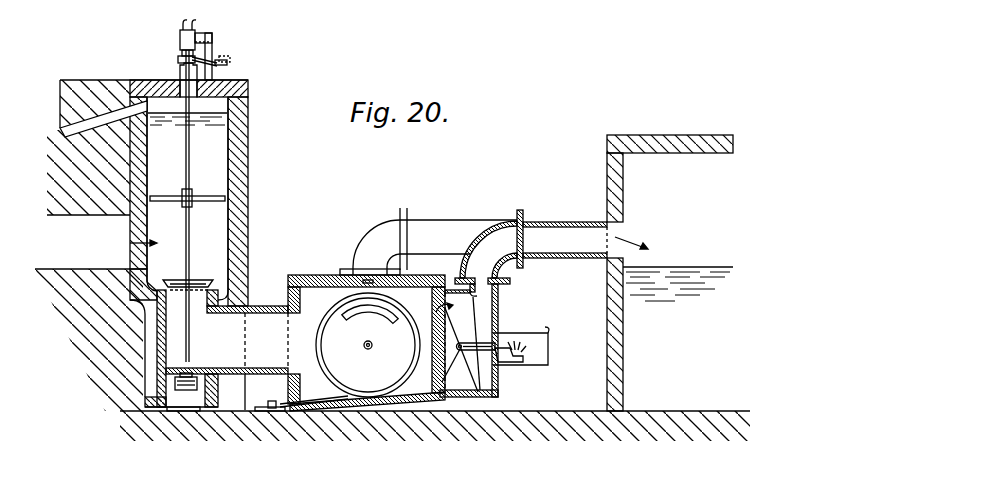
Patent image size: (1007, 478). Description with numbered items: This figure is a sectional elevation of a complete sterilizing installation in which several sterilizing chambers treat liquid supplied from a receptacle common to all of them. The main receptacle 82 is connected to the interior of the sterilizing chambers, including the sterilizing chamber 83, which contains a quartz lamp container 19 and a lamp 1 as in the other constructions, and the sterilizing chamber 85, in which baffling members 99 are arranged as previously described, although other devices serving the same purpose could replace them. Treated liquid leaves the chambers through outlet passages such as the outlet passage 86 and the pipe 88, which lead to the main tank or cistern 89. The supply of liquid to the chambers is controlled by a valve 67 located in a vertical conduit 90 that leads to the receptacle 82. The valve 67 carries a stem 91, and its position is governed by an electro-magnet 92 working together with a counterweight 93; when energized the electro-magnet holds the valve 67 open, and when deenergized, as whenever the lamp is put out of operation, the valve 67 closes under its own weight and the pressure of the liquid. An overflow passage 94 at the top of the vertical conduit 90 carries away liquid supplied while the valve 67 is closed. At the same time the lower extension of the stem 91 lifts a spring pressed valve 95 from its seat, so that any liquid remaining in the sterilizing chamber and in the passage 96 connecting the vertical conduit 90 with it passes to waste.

The electro-magnet 92 is at (181, 40).
The counterweight 93 is at (228, 68).
The overflow passage 94 is at (106, 118).
The stem 91 is at (191, 193).
The vertical conduit 90 is at (161, 288).
The valve 67 is at (208, 281).
The passage 96 is at (227, 358).
The spring pressed valve 95 is at (199, 389).
The main receptacle 82 is at (350, 340).
The sterilizing chamber 83 is at (322, 341).
The lamp 1 is at (371, 343).
The quartz lamp container 19 is at (368, 349).
The baffling members 99 is at (445, 381).
The sterilizing chamber 85 is at (476, 397).
The outlet passage 86 is at (458, 228).
The pipe 88 is at (587, 222).
The main tank or cistern 89 is at (678, 149).